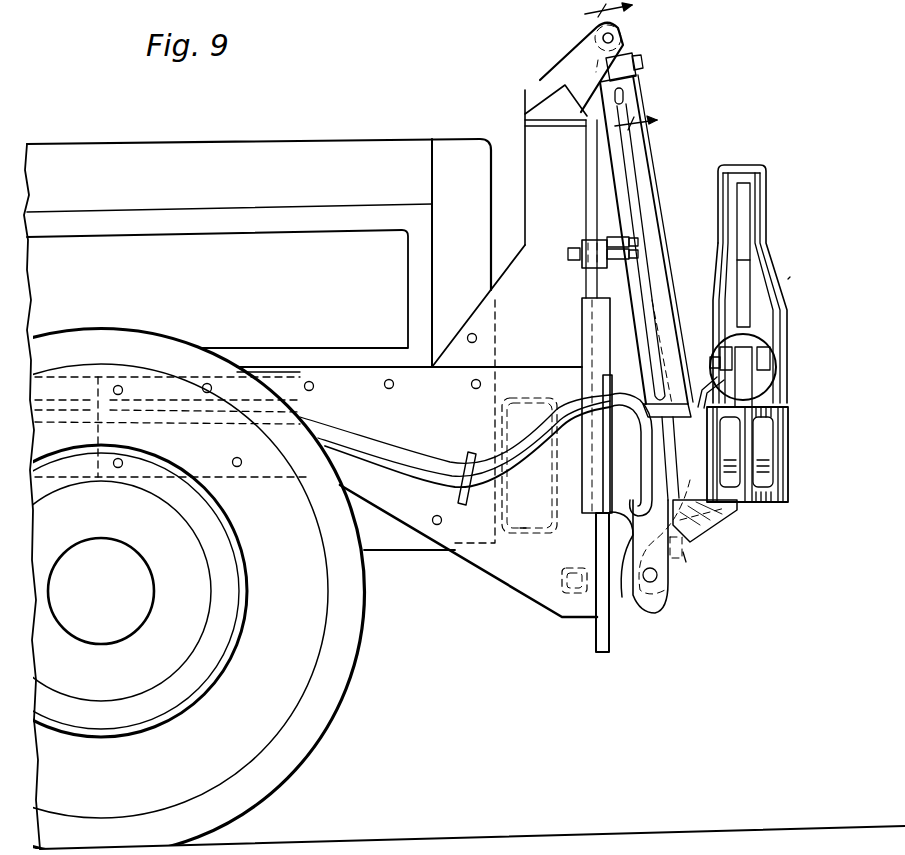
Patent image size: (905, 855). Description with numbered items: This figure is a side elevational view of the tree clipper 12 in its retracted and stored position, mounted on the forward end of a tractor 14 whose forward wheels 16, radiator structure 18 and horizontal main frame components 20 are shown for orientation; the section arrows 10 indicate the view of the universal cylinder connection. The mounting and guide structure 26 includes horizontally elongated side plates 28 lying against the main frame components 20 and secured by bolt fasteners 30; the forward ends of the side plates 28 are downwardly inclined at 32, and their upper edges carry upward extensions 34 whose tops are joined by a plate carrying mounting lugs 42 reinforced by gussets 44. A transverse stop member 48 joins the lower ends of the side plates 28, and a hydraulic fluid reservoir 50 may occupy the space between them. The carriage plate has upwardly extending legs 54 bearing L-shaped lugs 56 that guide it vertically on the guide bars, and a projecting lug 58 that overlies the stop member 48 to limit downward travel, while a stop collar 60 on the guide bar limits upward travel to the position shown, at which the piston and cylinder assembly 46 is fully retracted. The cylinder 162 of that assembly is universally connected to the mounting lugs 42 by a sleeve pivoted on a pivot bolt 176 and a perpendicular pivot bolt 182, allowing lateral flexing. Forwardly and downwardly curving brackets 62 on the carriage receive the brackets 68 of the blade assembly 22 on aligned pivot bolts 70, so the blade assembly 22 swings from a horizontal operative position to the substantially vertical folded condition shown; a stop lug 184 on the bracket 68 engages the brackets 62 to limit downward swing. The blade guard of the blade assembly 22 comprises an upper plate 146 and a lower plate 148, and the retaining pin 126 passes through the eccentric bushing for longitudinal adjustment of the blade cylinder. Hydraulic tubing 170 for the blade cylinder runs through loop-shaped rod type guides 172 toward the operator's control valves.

The section line / view direction 10 is at (641, 69).
The tree clipper 12 is at (793, 277).
The tractor 14 is at (302, 138).
The forward wheels 16 is at (282, 745).
The radiator structure 18 is at (442, 150).
The main frame components 20 is at (400, 533).
The blade assembly 22 is at (790, 411).
The mounting and guide structure 26 is at (521, 163).
The side plates 28 is at (340, 385).
The bolt fasteners 30 is at (300, 380).
The downwardly inclined forward end 32 is at (472, 560).
The upward extensions 34 is at (564, 201).
The mounting lugs 42 is at (575, 63).
The gussets 44 is at (552, 110).
The piston and cylinder assembly 46 is at (660, 168).
The transverse member 48 is at (563, 595).
The hydraulic fluid reservoir 50 is at (523, 533).
The legs 54 is at (605, 320).
The L-shaped lugs 56 is at (578, 322).
The projecting lug 58 is at (529, 465).
The stop collar 60 is at (583, 243).
The brackets 62 is at (622, 597).
The brackets 68 is at (690, 542).
The pivot bolts 70 is at (670, 592).
The retaining pin 126 is at (783, 360).
The upper plate 146 is at (720, 210).
The lower plate 148 is at (768, 222).
The cylinder 162 is at (633, 100).
The tubing 170 is at (377, 462).
The rod type guides 172 is at (468, 458).
The pivot bolt 176 is at (620, 34).
The pivot bolt 182 is at (642, 63).
The stop lug 184 is at (683, 557).